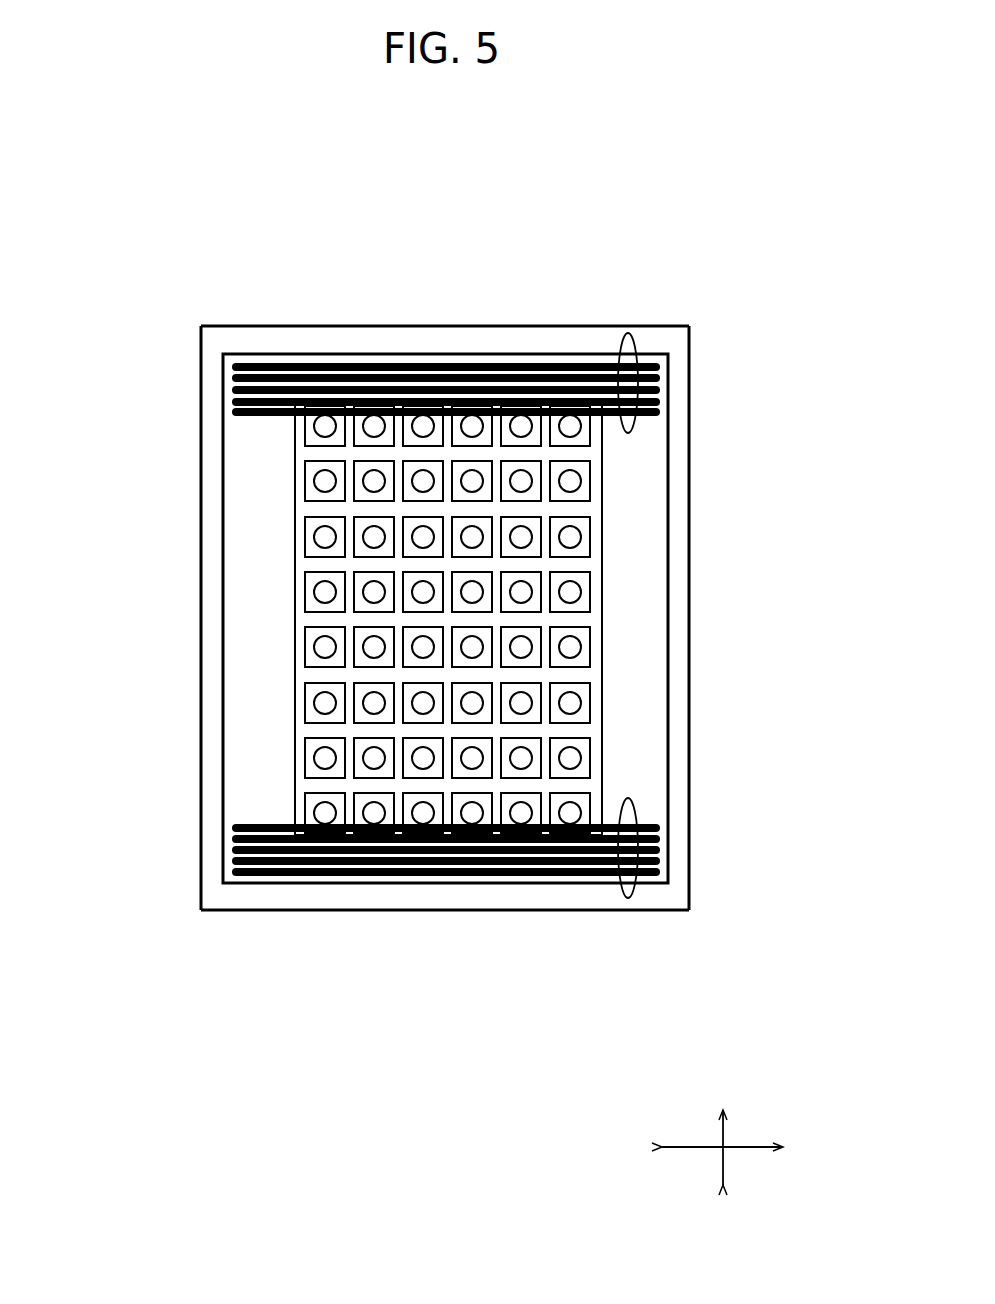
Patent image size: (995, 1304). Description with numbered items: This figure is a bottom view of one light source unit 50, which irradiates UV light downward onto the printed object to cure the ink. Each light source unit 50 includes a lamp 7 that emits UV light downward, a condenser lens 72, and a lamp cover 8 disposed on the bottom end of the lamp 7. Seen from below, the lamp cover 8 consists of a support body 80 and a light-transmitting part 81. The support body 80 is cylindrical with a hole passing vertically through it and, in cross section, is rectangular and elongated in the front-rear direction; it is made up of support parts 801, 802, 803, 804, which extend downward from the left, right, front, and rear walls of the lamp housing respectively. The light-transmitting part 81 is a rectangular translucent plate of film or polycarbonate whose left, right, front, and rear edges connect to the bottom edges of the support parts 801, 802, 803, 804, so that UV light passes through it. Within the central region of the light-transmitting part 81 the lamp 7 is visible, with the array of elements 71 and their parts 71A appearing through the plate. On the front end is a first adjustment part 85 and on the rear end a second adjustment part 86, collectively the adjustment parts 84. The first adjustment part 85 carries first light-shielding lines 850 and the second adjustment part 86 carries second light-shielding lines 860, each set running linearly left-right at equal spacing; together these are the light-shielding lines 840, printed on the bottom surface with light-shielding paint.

The light source unit 50 is at (720, 272).
The lamp cover 8 is at (694, 790).
The support body 80 is at (218, 338).
The support part 801 is at (215, 572).
The support part 802 is at (675, 393).
The support part 803 is at (448, 335).
The support part 804 is at (538, 893).
The light-transmitting part 81 is at (258, 756).
The adjustment parts 84 is at (477, 617).
The first adjustment part 85 is at (630, 333).
The second adjustment part 86 is at (628, 897).
The light-shielding lines 840 is at (312, 268).
The first light-shielding lines 850 is at (252, 367).
The second light-shielding lines 860 is at (282, 863).
The lamp 7 is at (290, 517).
The battery cells 71 is at (592, 505).
The cell terminal 71A is at (570, 592).
The condenser lens 72 is at (615, 693).